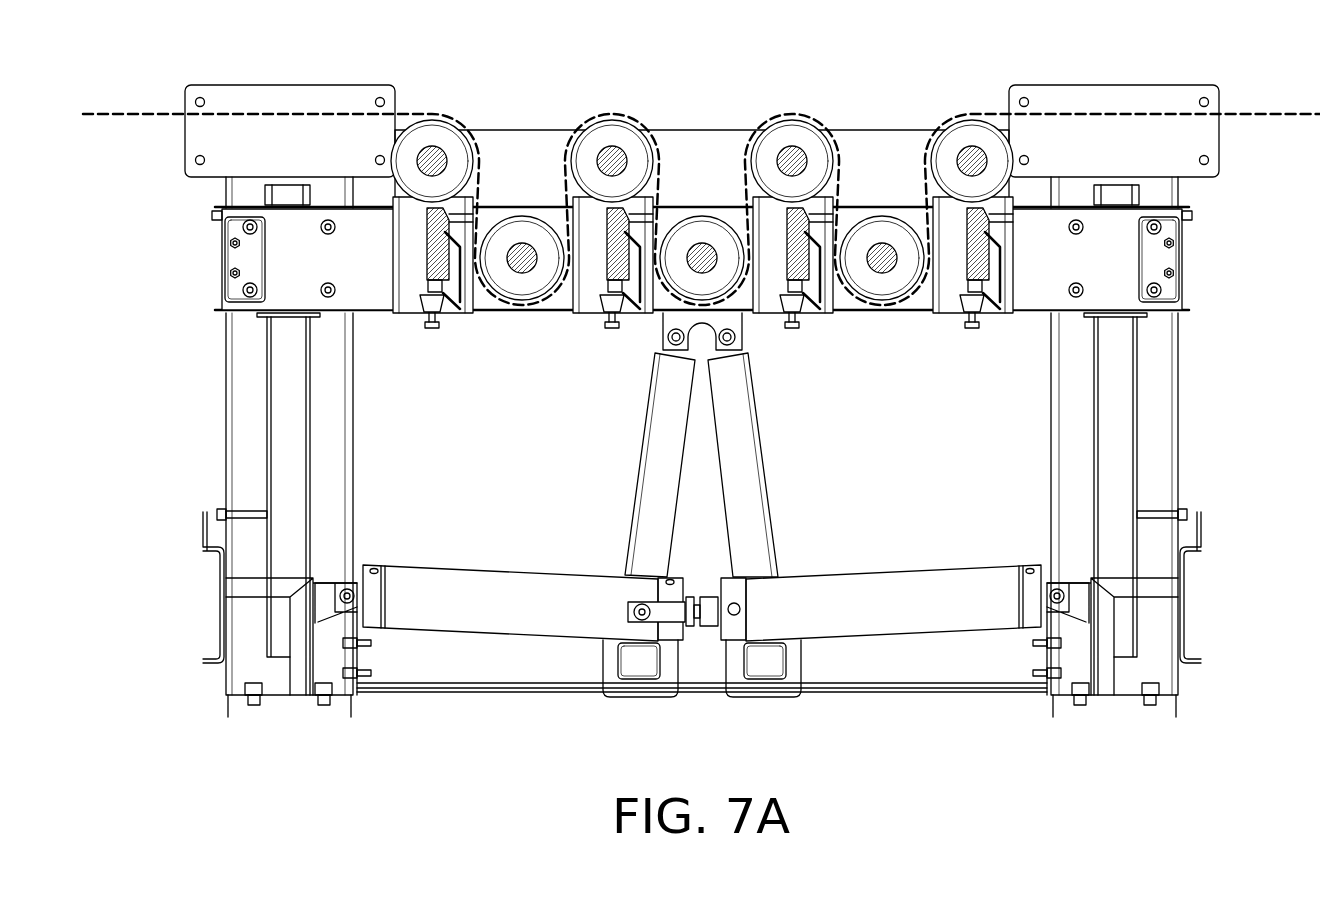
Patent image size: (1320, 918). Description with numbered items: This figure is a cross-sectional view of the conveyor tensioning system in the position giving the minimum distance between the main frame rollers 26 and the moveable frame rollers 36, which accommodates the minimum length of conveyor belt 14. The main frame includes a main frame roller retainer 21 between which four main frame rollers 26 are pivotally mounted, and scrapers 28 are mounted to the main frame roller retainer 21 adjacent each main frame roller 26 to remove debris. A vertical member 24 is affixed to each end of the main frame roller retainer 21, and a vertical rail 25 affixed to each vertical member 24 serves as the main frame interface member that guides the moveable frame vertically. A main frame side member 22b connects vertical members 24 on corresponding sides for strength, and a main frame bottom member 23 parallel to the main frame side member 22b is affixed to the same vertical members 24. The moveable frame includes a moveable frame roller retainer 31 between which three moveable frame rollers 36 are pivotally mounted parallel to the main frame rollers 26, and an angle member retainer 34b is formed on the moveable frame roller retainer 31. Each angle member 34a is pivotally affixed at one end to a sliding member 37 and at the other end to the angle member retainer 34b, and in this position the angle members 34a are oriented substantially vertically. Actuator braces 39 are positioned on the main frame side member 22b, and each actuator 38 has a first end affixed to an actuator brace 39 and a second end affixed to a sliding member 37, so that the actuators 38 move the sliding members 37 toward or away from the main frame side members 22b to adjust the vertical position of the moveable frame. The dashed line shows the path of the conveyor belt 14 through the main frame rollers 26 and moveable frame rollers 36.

The conveyor belt 14 is at (120, 110).
The main frame roller retainer 21 is at (888, 130).
The main frame side member 22b is at (203, 655).
The main frame bottom member 23 is at (350, 716).
The vertical member 24 is at (225, 415).
The vertical rail 25 is at (283, 347).
The main frame roller 26 is at (440, 118).
The scraper 28 is at (423, 255).
The moveable frame roller retainer 31 is at (1060, 253).
The angle member 34a is at (740, 482).
The angle member retainer 34b is at (663, 322).
The moveable frame roller 36 is at (705, 214).
The sliding member 37 is at (603, 660).
The actuator 38 is at (532, 575).
The actuator brace 39 is at (285, 582).